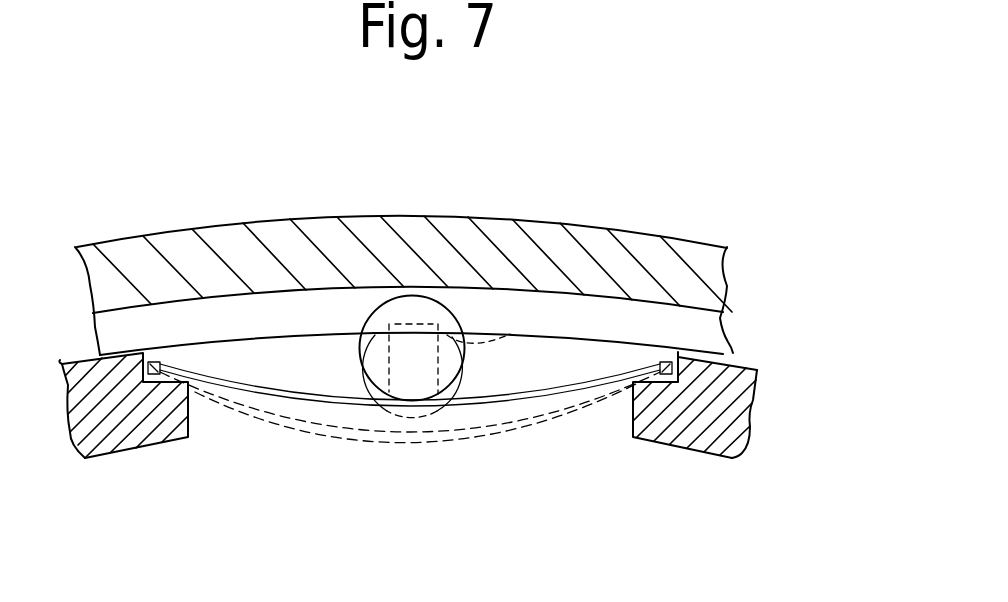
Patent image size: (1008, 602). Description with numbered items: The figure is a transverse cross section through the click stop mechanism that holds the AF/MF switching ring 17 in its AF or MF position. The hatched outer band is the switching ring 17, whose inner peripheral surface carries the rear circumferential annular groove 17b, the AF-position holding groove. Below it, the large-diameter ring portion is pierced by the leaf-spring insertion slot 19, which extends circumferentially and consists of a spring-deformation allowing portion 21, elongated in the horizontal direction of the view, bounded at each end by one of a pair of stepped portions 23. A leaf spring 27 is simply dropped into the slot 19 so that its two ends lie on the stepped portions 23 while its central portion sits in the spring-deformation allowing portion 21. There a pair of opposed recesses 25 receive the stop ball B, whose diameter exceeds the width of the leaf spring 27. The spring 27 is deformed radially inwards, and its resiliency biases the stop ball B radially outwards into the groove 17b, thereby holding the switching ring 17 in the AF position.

The AF/MF switching ring 17 is at (555, 243).
The rear circumferential annular groove 17b is at (640, 320).
The leaf-spring insertion slot 19 is at (268, 353).
The spring-deformation allowing portion 21 is at (190, 415).
The stepped portions 23 is at (153, 364).
The opposed recesses 25 is at (403, 433).
The leaf spring 27 is at (562, 392).
The stop ball B is at (450, 310).